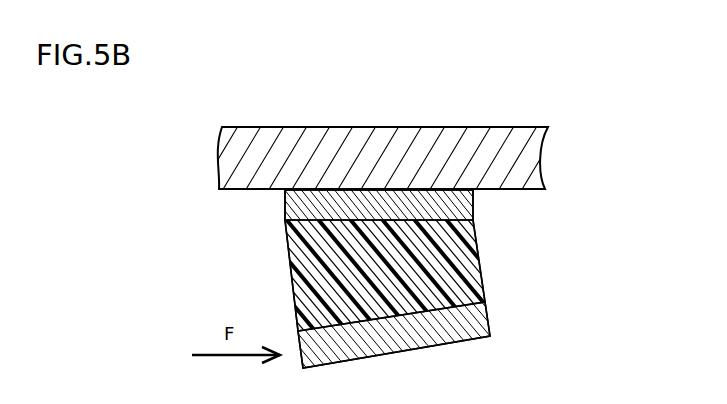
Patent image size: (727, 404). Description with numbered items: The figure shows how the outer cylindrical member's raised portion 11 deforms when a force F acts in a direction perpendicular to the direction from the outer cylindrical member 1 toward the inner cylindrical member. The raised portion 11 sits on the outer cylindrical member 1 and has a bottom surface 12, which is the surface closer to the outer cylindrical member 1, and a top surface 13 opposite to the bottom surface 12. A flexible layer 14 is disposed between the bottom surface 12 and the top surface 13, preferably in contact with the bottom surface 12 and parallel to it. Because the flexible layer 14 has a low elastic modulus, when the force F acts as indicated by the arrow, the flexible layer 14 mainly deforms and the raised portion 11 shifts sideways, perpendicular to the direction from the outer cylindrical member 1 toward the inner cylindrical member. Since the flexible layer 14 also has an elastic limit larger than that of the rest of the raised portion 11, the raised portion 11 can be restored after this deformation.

The outer cylindrical member 1 is at (366, 148).
The outer cylindrical member's raised portion 11 is at (252, 252).
The bottom surface 12 is at (472, 208).
The top surface 13 is at (455, 343).
The flexible layer 14 is at (474, 252).